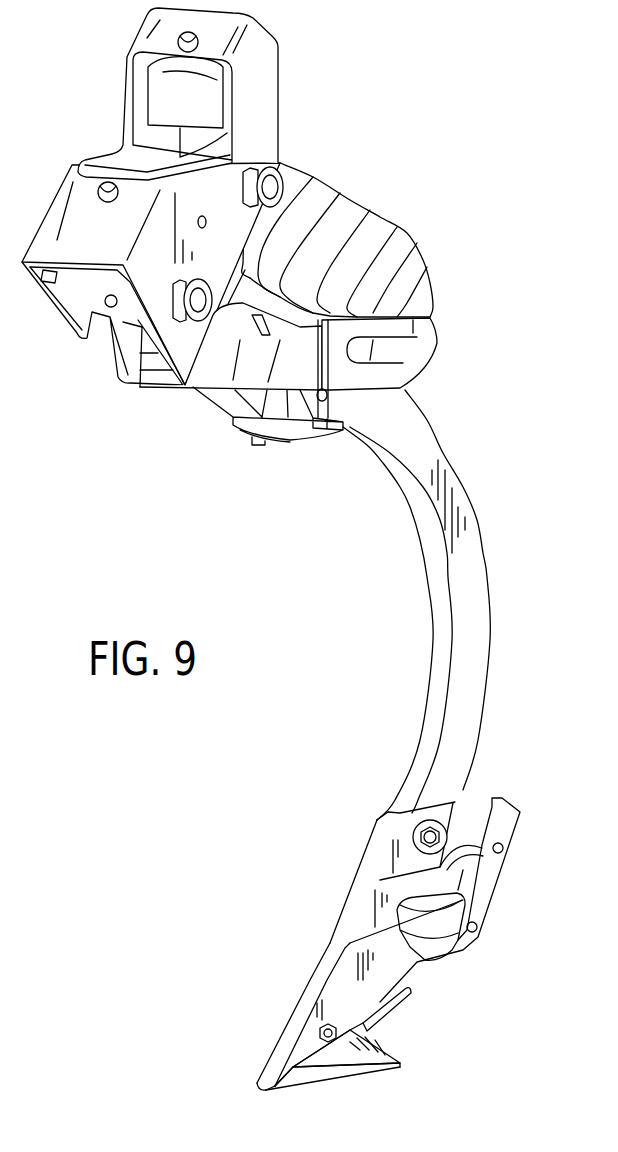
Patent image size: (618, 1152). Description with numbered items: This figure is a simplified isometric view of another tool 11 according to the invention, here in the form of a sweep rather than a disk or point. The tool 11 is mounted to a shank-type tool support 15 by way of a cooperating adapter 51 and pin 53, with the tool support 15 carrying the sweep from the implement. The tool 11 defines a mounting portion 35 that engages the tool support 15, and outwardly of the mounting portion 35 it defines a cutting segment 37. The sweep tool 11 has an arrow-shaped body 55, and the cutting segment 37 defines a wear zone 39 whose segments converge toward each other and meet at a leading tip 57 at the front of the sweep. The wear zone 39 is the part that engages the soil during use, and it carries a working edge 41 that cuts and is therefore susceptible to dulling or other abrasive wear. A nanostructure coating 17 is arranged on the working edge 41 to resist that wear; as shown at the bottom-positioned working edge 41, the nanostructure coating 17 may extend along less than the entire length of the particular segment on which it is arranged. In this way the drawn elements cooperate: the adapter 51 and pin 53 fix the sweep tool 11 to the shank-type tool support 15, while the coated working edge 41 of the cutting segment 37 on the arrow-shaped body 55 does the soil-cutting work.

The tool 11 is at (550, 473).
The tool support 15 is at (440, 638).
The nanostructure coating 17 is at (265, 1065).
The mounting portion 35 is at (343, 1055).
The cutting segment 37 is at (270, 1022).
The wear zone 39 is at (298, 1090).
The working edge 41 is at (278, 1043).
The adapter 51 is at (367, 937).
The pin 53 is at (322, 1028).
The arrow-shaped body 55 is at (403, 1063).
The leading tip 57 is at (247, 1085).